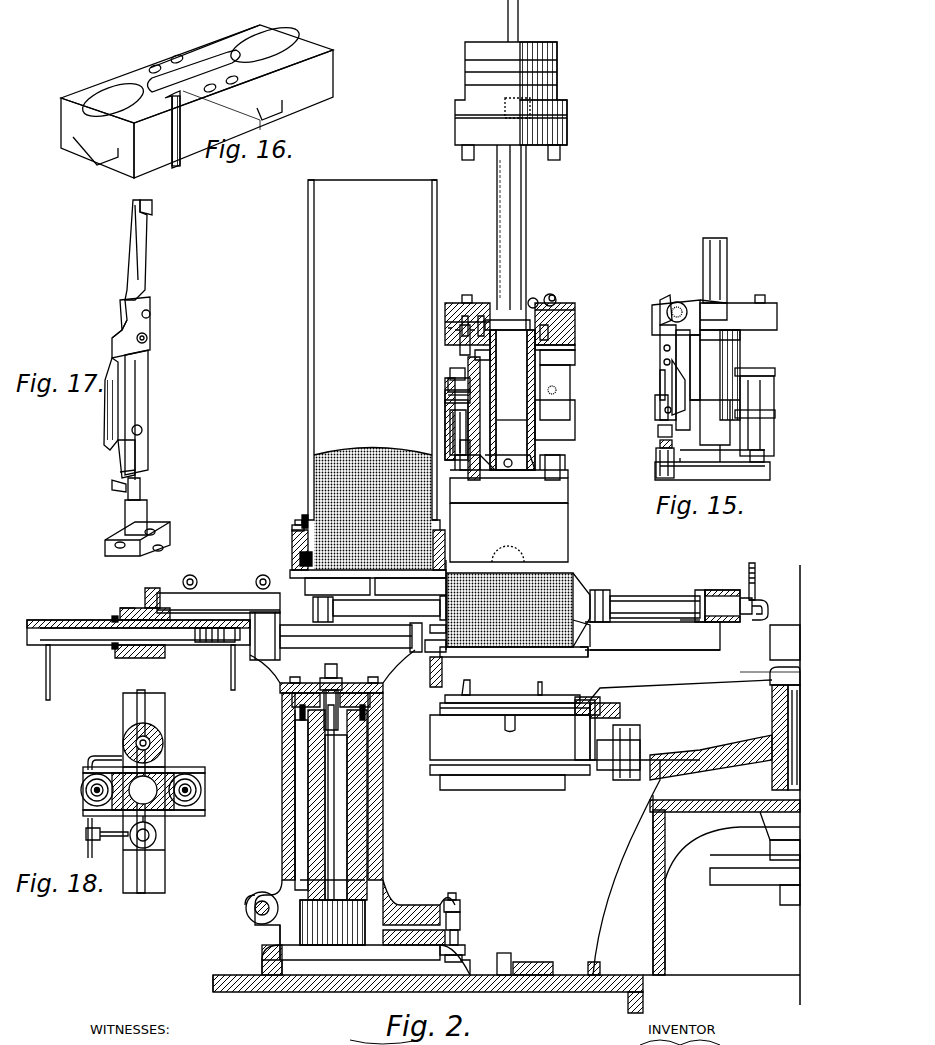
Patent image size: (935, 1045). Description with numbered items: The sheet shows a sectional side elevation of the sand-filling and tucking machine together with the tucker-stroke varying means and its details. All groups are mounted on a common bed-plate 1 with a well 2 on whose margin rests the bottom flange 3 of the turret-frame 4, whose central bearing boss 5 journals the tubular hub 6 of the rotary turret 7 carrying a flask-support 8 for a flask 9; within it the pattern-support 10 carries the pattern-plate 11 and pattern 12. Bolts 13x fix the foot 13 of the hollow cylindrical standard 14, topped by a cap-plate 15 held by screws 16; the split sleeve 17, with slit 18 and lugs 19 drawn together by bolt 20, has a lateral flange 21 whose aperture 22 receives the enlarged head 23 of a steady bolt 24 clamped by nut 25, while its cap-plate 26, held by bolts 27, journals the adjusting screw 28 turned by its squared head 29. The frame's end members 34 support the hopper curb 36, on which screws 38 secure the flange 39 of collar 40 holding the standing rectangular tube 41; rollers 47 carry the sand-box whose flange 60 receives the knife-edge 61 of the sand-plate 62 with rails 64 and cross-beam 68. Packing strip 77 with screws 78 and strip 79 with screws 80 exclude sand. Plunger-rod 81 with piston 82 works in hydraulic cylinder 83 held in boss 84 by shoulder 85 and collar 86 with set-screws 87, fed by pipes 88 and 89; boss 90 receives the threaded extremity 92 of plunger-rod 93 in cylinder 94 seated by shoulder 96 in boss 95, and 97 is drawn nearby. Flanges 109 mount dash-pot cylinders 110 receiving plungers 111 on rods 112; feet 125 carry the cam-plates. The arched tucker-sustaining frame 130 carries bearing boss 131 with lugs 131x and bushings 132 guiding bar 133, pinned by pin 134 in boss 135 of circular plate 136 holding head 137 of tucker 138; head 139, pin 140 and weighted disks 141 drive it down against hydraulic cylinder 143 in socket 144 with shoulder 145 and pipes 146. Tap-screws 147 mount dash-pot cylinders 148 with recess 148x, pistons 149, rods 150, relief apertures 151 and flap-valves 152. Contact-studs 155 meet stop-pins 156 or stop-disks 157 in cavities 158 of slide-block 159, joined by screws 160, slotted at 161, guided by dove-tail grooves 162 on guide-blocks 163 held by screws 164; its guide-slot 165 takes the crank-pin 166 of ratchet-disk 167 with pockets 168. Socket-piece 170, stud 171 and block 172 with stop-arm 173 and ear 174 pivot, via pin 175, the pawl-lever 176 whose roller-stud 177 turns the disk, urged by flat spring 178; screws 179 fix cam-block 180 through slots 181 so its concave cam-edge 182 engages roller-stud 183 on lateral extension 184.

In FIG. 2, the bed-plate 1 is at (566, 990).
In FIG. 2, the well 2 is at (645, 990).
In FIG. 2, the bottom flange 3 is at (629, 867).
In FIG. 2, the turret-frame 4 is at (738, 815).
In FIG. 2, the central bearing boss 5 is at (755, 858).
In FIG. 2, the tubular hub 6 is at (775, 718).
In FIG. 2, the rotary turret 7 is at (660, 718).
In FIG. 2, the flask-support 8 is at (596, 694).
In FIG. 2, the flask 9 is at (440, 680).
In FIG. 2, the pattern-support 10 is at (516, 720).
In FIG. 2, the pattern-plate 11 is at (492, 710).
In FIG. 2, the pattern 12 is at (470, 690).
In FIG. 2, the foot 13 is at (540, 962).
In FIG. 2, the bolts 13x is at (510, 957).
In FIG. 2, the hollow cylindrical standard 14 is at (360, 826).
In FIG. 2, the cap-plate 15 is at (337, 720).
In FIG. 2, the screws 16 is at (340, 710).
In FIG. 2, the split sleeve 17 is at (378, 792).
In FIG. 2, the longitudinal slit 18 is at (284, 826).
In FIG. 2, the spaced lugs 19 is at (253, 905).
In FIG. 2, the bolt 20 is at (258, 914).
In FIG. 2, the lateral flange 21 is at (410, 910).
In FIG. 2, the aperture 22 is at (462, 912).
In FIG. 2, the enlarged head 23 is at (462, 922).
In FIG. 2, the steady bolt 24 is at (446, 948).
In FIG. 2, the nut 25 is at (458, 958).
In FIG. 2, the cap-plate 26 is at (348, 685).
In FIG. 2, the bolts 27 is at (385, 682).
In FIG. 2, the adjusting screw 28 is at (295, 700).
In FIG. 2, the squared head 29 is at (324, 678).
In FIG. 2, the end members 34 is at (140, 600).
In FIG. 2, the rectangular curb 36 is at (296, 546).
In FIG. 2, the screws 38 is at (298, 520).
In FIG. 2, the flange 39 is at (296, 528).
In FIG. 2, the collar 40 is at (306, 512).
In FIG. 2, the standing rectangular tube 41 is at (307, 438).
In FIG. 2, the bearing and guiding roller 47 is at (186, 580).
In FIG. 2, the forwardly extending flange 60 is at (590, 635).
In FIG. 2, the knife-edge 61 is at (570, 652).
In FIG. 2, the sand-plate 62 is at (512, 652).
In FIG. 2, the rails 64 is at (650, 625).
In FIG. 2, the cross-beam 68 is at (412, 630).
In FIG. 2, the yielding packing strip 77 is at (446, 646).
In FIG. 2, the fastening screws 78 is at (446, 633).
In FIG. 2, the yielding packing strip 79 is at (300, 572).
In FIG. 2, the fastening screws 80 is at (305, 558).
In FIG. 2, the plunger-rod 81 is at (356, 640).
In FIG. 2, the piston 82 is at (208, 650).
In FIG. 2, the hydraulic cylinder 83 is at (86, 648).
In FIG. 2, the tubular boss 84 is at (135, 612).
In FIG. 2, the annular shoulder 85 is at (170, 652).
In FIG. 2, the collar 86 is at (112, 616).
In FIG. 2, the set-screws 87 is at (114, 650).
In FIG. 2, the pipe 88 is at (47, 676).
In FIG. 2, the pipe 89 is at (236, 674).
In FIG. 2, the boss 90 is at (580, 595).
In FIG. 2, the reduced threaded extremity 92 is at (600, 600).
In FIG. 2, the plunger-rod 93 is at (758, 622).
In FIG. 2, the hydraulic cylinder 94 is at (655, 607).
In FIG. 2, the tubular boss 95 is at (715, 592).
In FIG. 2, the annular shoulder 96 is at (695, 595).
In FIG. 2, the pipe 97 is at (755, 586).
In FIG. 2, the flanges 109 is at (158, 592).
In FIG. 2, the dash-pot cylinders 110 is at (218, 603).
In FIG. 2, the plungers 111 is at (313, 606).
In FIG. 2, the rods 112 is at (383, 612).
In FIG. 2, the feet 125 is at (690, 630).
In FIG. 15, the arched tucker-sustaining frame 130 is at (713, 341).
In FIG. 18, the arched tucker-sustaining frame 130 is at (128, 702).
In FIG. 2, the bearing boss 131 is at (475, 375).
In FIG. 15, the lateral lugs 131x is at (770, 332).
In FIG. 2, the lateral lugs 131x is at (570, 340).
In FIG. 2, the fixed bushings 132 is at (510, 395).
In FIG. 18, the vertically movable bar 133 is at (160, 770).
In FIG. 2, the vertically movable bar 133 is at (520, 262).
In FIG. 2, the transverse pin 134 is at (507, 478).
In FIG. 2, the boss 135 is at (522, 478).
In FIG. 15, the circular plate 136 is at (768, 478).
In FIG. 18, the circular plate 136 is at (207, 782).
In FIG. 2, the circular plate 136 is at (482, 478).
In FIG. 2, the head 137 is at (570, 493).
In FIG. 2, the tucker 138 is at (509, 532).
In FIG. 2, the head 139 is at (455, 130).
In FIG. 2, the central pin 140 is at (514, 10).
In FIG. 2, the weighted disks 141 is at (487, 42).
In FIG. 18, the hydraulic cylinder 143 is at (152, 743).
In FIG. 15, the lateral socket 144 is at (745, 350).
In FIG. 18, the lateral socket 144 is at (152, 735).
In FIG. 18, the shoulder 145 is at (105, 840).
In FIG. 18, the pipes 146 is at (98, 752).
In FIG. 15, the tap-screws 147 is at (755, 375).
In FIG. 18, the tap-screws 147 is at (204, 770).
In FIG. 15, the dash-pot cylinders 148 is at (774, 403).
In FIG. 18, the dash-pot cylinders 148 is at (200, 792).
In FIG. 2, the dash-pot cylinders 148 is at (450, 415).
In FIG. 2, the recess 148x is at (455, 372).
In FIG. 2, the pistons 149 is at (450, 400).
In FIG. 15, the rods 150 is at (765, 458).
In FIG. 18, the rods 150 is at (192, 800).
In FIG. 2, the rods 150 is at (448, 430).
In FIG. 2, the relief apertures 151 is at (455, 455).
In FIG. 2, the spring-pressed flap-valves 152 is at (452, 388).
In FIG. 2, the contact-studs 155 is at (462, 155).
In FIG. 15, the stop-pins 156 is at (760, 296).
In FIG. 2, the stop-pins 156 is at (468, 300).
In FIG. 15, the detachable stop-disks 157 is at (775, 306).
In FIG. 2, the detachable stop-disks 157 is at (458, 302).
In FIG. 16, the circular cavities 158 is at (106, 92).
In FIG. 16, the reciprocating slide-block 159 is at (212, 42).
In FIG. 2, the reciprocating slide-block 159 is at (573, 315).
In FIG. 16, the screws 160 is at (175, 57).
In FIG. 16, the longitudinal slot 161 is at (205, 78).
In FIG. 16, the dove-tail grooves 162 is at (95, 151).
In FIG. 2, the guide-blocks 163 is at (450, 325).
In FIG. 2, the screws 164 is at (570, 324).
In FIG. 16, the vertical guide-slot 165 is at (172, 160).
In FIG. 2, the vertical guide-slot 165 is at (532, 298).
In FIG. 15, the crank-pin 166 is at (672, 298).
In FIG. 2, the crank-pin 166 is at (550, 292).
In FIG. 15, the ratchet-disk 167 is at (692, 303).
In FIG. 15, the external pockets 168 is at (715, 300).
In FIG. 17, the socket-piece 170 is at (124, 517).
In FIG. 15, the socket-piece 170 is at (658, 462).
In FIG. 2, the socket-piece 170 is at (563, 463).
In FIG. 17, the stud 171 is at (142, 488).
In FIG. 15, the stud 171 is at (660, 447).
In FIG. 17, the block 172 is at (122, 448).
In FIG. 15, the block 172 is at (660, 436).
In FIG. 17, the stop-arm 173 is at (112, 400).
In FIG. 15, the stop-arm 173 is at (682, 405).
In FIG. 15, the ear 174 is at (660, 405).
In FIG. 17, the transverse pin 175 is at (142, 432).
In FIG. 15, the transverse pin 175 is at (660, 410).
In FIG. 17, the pawl-lever 176 is at (143, 265).
In FIG. 17, the roller-stud 177 is at (152, 208).
In FIG. 15, the roller-stud 177 is at (658, 303).
In FIG. 17, the flat spring 178 is at (148, 405).
In FIG. 15, the flat spring 178 is at (660, 380).
In FIG. 17, the screws 179 is at (150, 316).
In FIG. 2, the screws 179 is at (560, 368).
In FIG. 17, the cam-block 180 is at (118, 348).
In FIG. 2, the cam-block 180 is at (560, 355).
In FIG. 17, the slots 181 is at (148, 340).
In FIG. 17, the concave cam-edge 182 is at (122, 325).
In FIG. 15, the roller-stud 183 is at (662, 340).
In FIG. 15, the lateral extension 184 is at (660, 360).